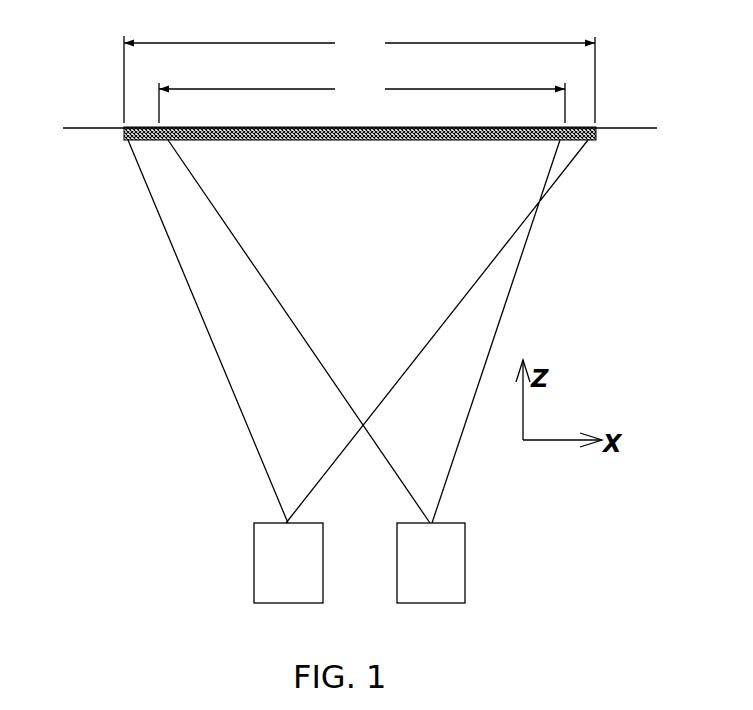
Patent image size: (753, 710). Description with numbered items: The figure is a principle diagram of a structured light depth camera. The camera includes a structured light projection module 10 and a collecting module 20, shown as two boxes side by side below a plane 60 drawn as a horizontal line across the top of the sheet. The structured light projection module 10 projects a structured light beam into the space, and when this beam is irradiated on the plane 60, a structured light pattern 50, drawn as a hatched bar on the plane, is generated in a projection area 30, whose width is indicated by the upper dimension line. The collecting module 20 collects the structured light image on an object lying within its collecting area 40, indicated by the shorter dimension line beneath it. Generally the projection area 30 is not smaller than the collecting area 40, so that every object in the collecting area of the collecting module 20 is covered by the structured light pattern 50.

The structured light projection module 10 is at (254, 553).
The collecting module 20 is at (465, 573).
The projection area 30 is at (359, 75).
The collecting area 40 is at (362, 99).
The structured light pattern 50 is at (395, 140).
The plane 60 is at (73, 128).